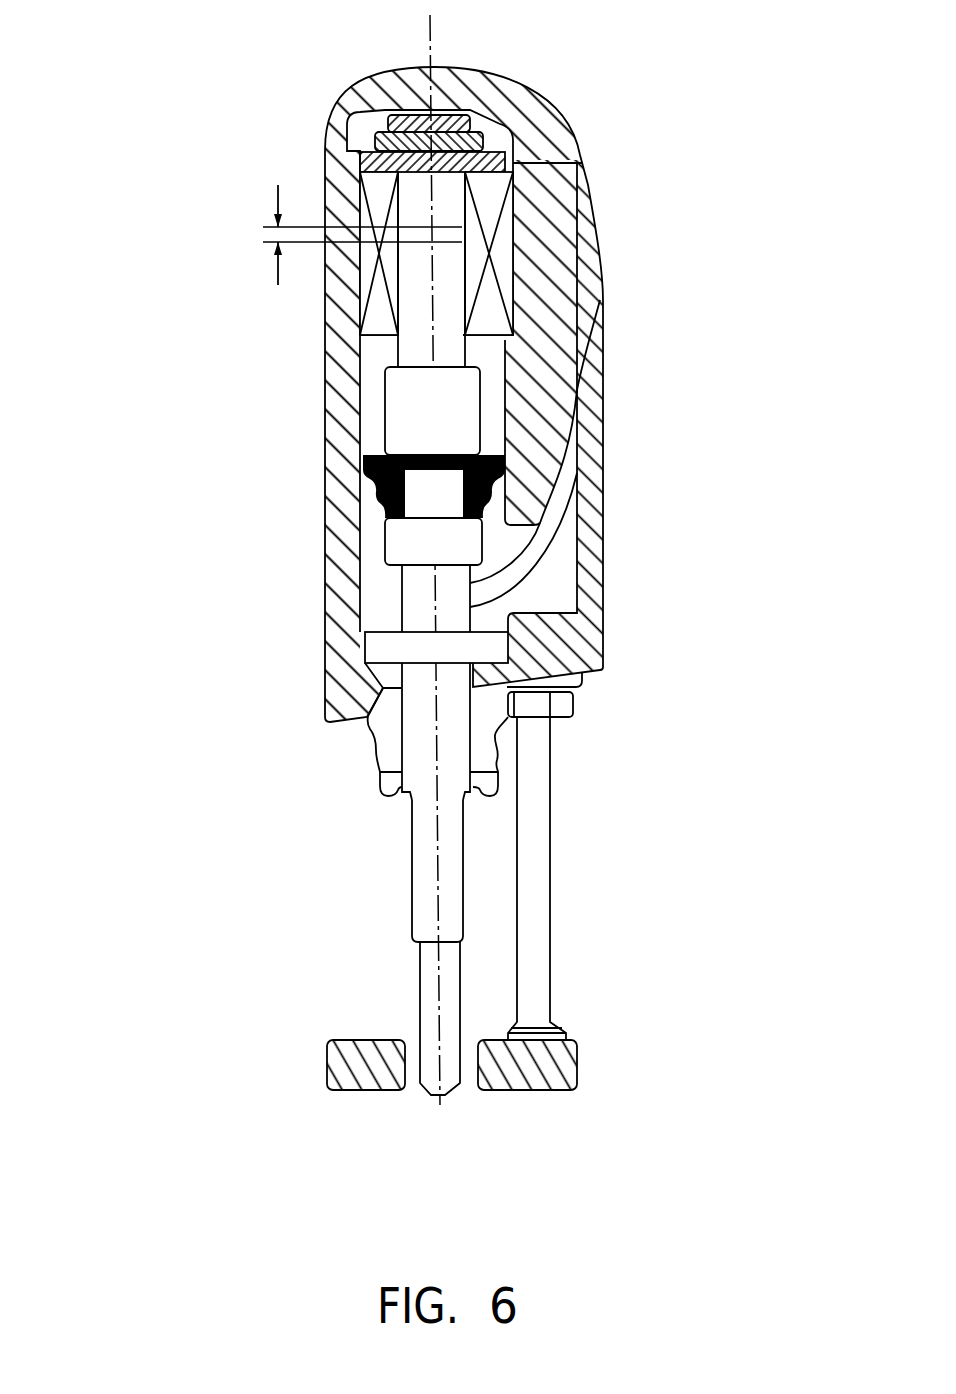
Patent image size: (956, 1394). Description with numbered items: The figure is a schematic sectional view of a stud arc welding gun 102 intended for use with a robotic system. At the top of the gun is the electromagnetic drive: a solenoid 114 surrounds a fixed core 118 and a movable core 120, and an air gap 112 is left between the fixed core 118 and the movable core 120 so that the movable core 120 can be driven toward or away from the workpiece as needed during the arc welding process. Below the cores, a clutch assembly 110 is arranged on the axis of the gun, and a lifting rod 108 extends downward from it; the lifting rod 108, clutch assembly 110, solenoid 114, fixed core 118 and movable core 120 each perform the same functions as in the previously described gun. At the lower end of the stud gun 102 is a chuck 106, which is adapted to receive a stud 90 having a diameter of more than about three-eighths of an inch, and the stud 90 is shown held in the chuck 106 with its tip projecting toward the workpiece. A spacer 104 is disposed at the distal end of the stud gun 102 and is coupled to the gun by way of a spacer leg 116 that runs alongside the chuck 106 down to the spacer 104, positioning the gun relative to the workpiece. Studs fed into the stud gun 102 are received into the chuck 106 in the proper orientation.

The stud arc welding gun 102 is at (107, 72).
The spacer 104 is at (327, 1063).
The chuck 106 is at (413, 917).
The lifting rod 108 is at (420, 736).
The clutch assembly 110 is at (383, 425).
The air gap 112 is at (263, 228).
The solenoid 114 is at (382, 192).
The spacer leg 116 is at (556, 990).
The fixed core 118 is at (446, 192).
The movable core 120 is at (447, 295).
The stud 90 is at (428, 1092).